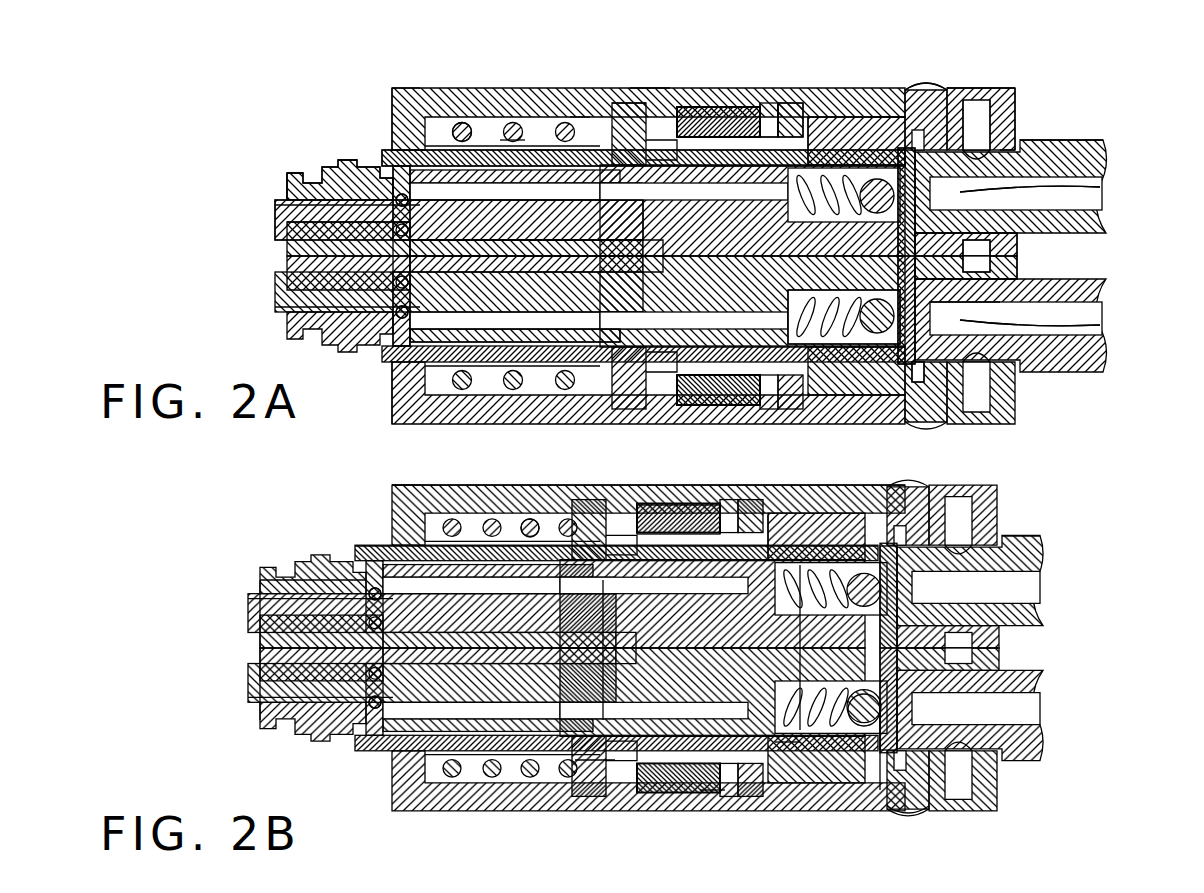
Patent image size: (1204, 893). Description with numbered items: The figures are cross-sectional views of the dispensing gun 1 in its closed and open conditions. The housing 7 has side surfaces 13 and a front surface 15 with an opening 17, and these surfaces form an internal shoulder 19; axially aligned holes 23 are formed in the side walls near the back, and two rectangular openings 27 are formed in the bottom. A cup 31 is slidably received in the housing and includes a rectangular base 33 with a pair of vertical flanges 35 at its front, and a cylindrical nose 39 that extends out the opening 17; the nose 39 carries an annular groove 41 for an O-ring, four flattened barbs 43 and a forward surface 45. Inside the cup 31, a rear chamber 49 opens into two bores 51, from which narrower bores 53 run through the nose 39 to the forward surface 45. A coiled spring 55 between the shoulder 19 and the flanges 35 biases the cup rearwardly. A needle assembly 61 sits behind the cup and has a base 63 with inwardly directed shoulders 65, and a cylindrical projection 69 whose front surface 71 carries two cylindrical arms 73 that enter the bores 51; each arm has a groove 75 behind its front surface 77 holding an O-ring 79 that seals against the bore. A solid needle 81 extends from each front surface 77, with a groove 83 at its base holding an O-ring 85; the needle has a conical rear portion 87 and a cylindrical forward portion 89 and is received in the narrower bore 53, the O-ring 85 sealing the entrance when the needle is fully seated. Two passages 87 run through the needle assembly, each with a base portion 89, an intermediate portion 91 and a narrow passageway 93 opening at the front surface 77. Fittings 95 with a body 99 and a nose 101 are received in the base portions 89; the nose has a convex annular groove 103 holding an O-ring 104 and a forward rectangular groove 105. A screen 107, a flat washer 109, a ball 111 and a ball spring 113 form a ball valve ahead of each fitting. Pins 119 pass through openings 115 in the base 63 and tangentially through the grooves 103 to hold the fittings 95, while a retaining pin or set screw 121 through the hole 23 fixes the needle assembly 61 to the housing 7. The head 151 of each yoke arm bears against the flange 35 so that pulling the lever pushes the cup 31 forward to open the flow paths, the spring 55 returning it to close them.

In FIG. 2A, the gun 1 is at (1085, 98).
In FIG. 2A, the housing 7 is at (600, 112).
In FIG. 2B, the housing 7 is at (870, 500).
In FIG. 2A, the side surfaces 13 is at (648, 100).
In FIG. 2B, the side surfaces 13 is at (470, 485).
In FIG. 2A, the front surface 15 is at (392, 122).
In FIG. 2A, the opening 17 is at (385, 390).
In FIG. 2A, the shoulder 19 is at (410, 95).
In FIG. 2A, the holes 23 is at (972, 95).
In FIG. 2A, the rectangular openings 27 is at (780, 110).
In FIG. 2A, the cup 31 is at (578, 114).
In FIG. 2B, the cup 31 is at (705, 785).
In FIG. 2A, the base 33 is at (735, 120).
In FIG. 2A, the vertical flanges 35 is at (512, 128).
In FIG. 2B, the vertical flanges 35 is at (600, 770).
In FIG. 2A, the cylindrical nose 39 is at (322, 172).
In FIG. 2B, the cylindrical nose 39 is at (300, 578).
In FIG. 2A, the annular groove 41 is at (300, 174).
In FIG. 2A, the barbs 43 is at (345, 162).
In FIG. 2A, the forward surface 45 is at (287, 192).
In FIG. 2B, the forward surface 45 is at (262, 645).
In FIG. 2A, the rear chamber 49 is at (640, 390).
In FIG. 2A, the bores 51 is at (520, 345).
In FIG. 2B, the bores 51 is at (375, 565).
In FIG. 2A, the narrower bores 53 is at (310, 335).
In FIG. 2B, the narrower bores 53 is at (340, 623).
In FIG. 2A, the coiled spring 55 is at (462, 122).
In FIG. 2B, the coiled spring 55 is at (530, 522).
In FIG. 2A, the needle assembly 61 is at (840, 110).
In FIG. 2B, the needle assembly 61 is at (740, 505).
In FIG. 2A, the base 63 is at (880, 110).
In FIG. 2A, the shoulders 65 is at (797, 115).
In FIG. 2A, the cylindrical projection 69 is at (766, 110).
In FIG. 2A, the front surface 71 is at (628, 110).
In FIG. 2A, the cylindrical arms 73 is at (540, 150).
In FIG. 2A, the groove 75 is at (490, 345).
In FIG. 2A, the front surface 77 is at (395, 350).
In FIG. 2A, the O-ring 79 is at (425, 355).
In FIG. 2A, the solid needle 81 is at (275, 305).
In FIG. 2A, the groove 83 is at (320, 237).
In FIG. 2A, the O-ring 85 is at (420, 252).
In FIG. 2A, the passages 87 is at (1010, 318).
In FIG. 2A, the base portion 89 is at (1020, 165).
In FIG. 2B, the base portion 89 is at (1000, 718).
In FIG. 2A, the intermediate portion 91 is at (1015, 190).
In FIG. 2B, the intermediate portion 91 is at (828, 560).
In FIG. 2A, the narrow passageway 93 is at (735, 310).
In FIG. 2B, the narrow passageway 93 is at (600, 580).
In FIG. 2A, the fittings 95 is at (1093, 138).
In FIG. 2B, the fittings 95 is at (1030, 542).
In FIG. 2A, the body 99 is at (1020, 265).
In FIG. 2A, the nose 101 is at (1000, 250).
In FIG. 2A, the convex annular groove 103 is at (985, 120).
In FIG. 2A, the O-ring 104 is at (1010, 290).
In FIG. 2A, the rectangular annular groove 105 is at (935, 380).
In FIG. 2B, the screen 107 is at (890, 806).
In FIG. 2B, the annular flat washer 109 is at (865, 720).
In FIG. 2B, the ball 111 is at (790, 720).
In FIG. 2B, the ball spring 113 is at (785, 760).
In FIG. 2A, the openings 115 is at (1010, 125).
In FIG. 2A, the pins 119 is at (990, 110).
In FIG. 2A, the retaining pin or set screw 121 is at (925, 88).
In FIG. 2A, the head 151 is at (700, 110).
In FIG. 2B, the head 151 is at (655, 508).